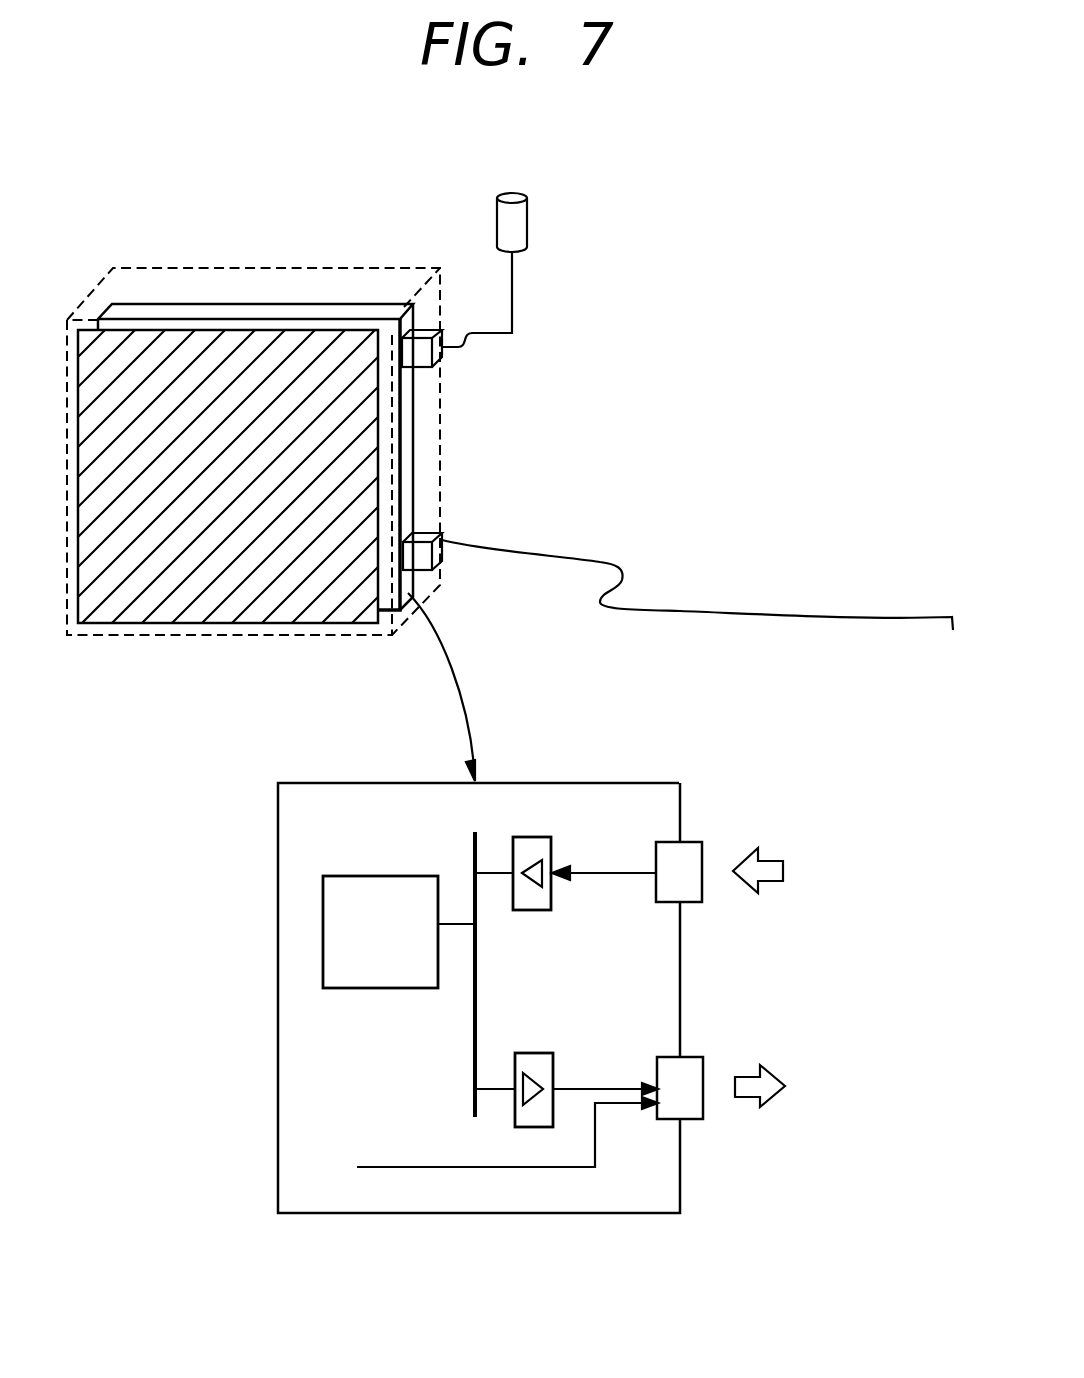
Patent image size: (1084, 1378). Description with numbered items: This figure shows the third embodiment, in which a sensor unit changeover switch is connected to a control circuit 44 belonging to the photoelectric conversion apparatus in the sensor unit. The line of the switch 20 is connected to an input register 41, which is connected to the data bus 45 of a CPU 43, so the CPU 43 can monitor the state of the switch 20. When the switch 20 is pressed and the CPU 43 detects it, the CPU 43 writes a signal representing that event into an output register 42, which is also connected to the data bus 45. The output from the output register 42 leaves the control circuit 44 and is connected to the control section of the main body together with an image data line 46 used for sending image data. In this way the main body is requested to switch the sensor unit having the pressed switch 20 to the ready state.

The switch 20 is at (528, 220).
The input register B1 41 is at (553, 857).
The output register B2 42 is at (555, 1066).
The CPU 43 is at (398, 876).
The control circuit 44 is at (617, 783).
The data bus 45 is at (479, 976).
The image data line 46 is at (460, 1168).